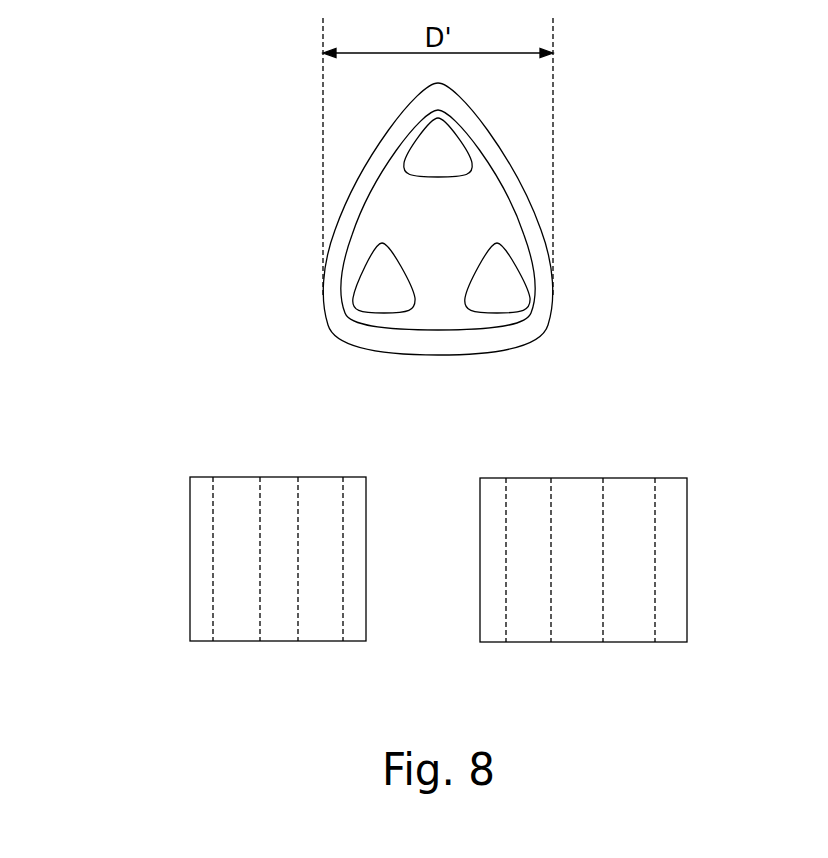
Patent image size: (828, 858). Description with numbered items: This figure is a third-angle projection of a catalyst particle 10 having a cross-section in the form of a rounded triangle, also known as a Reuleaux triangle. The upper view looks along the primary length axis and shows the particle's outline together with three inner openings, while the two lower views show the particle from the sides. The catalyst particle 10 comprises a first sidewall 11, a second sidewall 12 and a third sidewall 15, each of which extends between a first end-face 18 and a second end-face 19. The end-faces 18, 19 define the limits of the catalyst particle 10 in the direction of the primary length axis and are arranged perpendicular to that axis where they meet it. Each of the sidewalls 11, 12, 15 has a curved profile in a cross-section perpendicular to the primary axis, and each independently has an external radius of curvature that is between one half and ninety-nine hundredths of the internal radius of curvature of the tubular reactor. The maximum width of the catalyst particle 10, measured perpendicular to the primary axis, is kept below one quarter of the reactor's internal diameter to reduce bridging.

The catalyst particle 10 is at (134, 508).
The first sidewall 11 is at (370, 347).
The second sidewall 12 is at (378, 142).
The third sidewall 15 is at (537, 217).
The first end-face 18 is at (424, 244).
The second end-face 19 is at (303, 642).